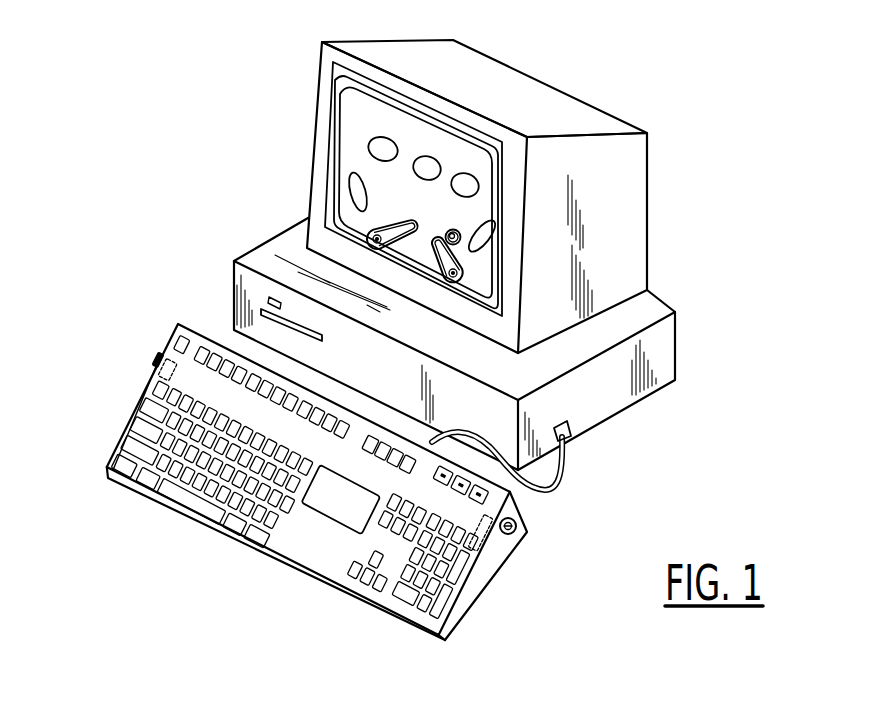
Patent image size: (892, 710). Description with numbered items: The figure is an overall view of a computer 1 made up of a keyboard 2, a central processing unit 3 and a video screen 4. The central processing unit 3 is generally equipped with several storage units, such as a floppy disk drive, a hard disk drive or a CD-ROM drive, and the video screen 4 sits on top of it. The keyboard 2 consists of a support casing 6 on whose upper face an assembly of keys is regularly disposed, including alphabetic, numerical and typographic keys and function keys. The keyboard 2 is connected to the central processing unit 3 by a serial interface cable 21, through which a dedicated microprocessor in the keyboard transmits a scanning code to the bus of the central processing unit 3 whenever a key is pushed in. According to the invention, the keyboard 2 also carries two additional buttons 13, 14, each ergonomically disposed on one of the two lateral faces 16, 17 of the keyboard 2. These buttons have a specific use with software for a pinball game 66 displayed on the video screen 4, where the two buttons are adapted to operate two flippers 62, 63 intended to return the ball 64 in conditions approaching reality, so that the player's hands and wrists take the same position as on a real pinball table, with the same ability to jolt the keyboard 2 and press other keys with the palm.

The computer 1 is at (148, 270).
The keyboard 2 is at (110, 457).
The central processing unit 3 is at (675, 352).
The video screen 4 is at (310, 205).
The support casing 6 is at (343, 570).
The additional button 13 is at (157, 352).
The additional button 14 is at (523, 533).
The lateral face 16 is at (140, 402).
The lateral face 17 is at (470, 588).
The serial interface cable 21 is at (575, 470).
The flipper 62 is at (377, 237).
The flipper 63 is at (463, 280).
The ball 64 is at (460, 232).
The pinball game 66 is at (467, 183).